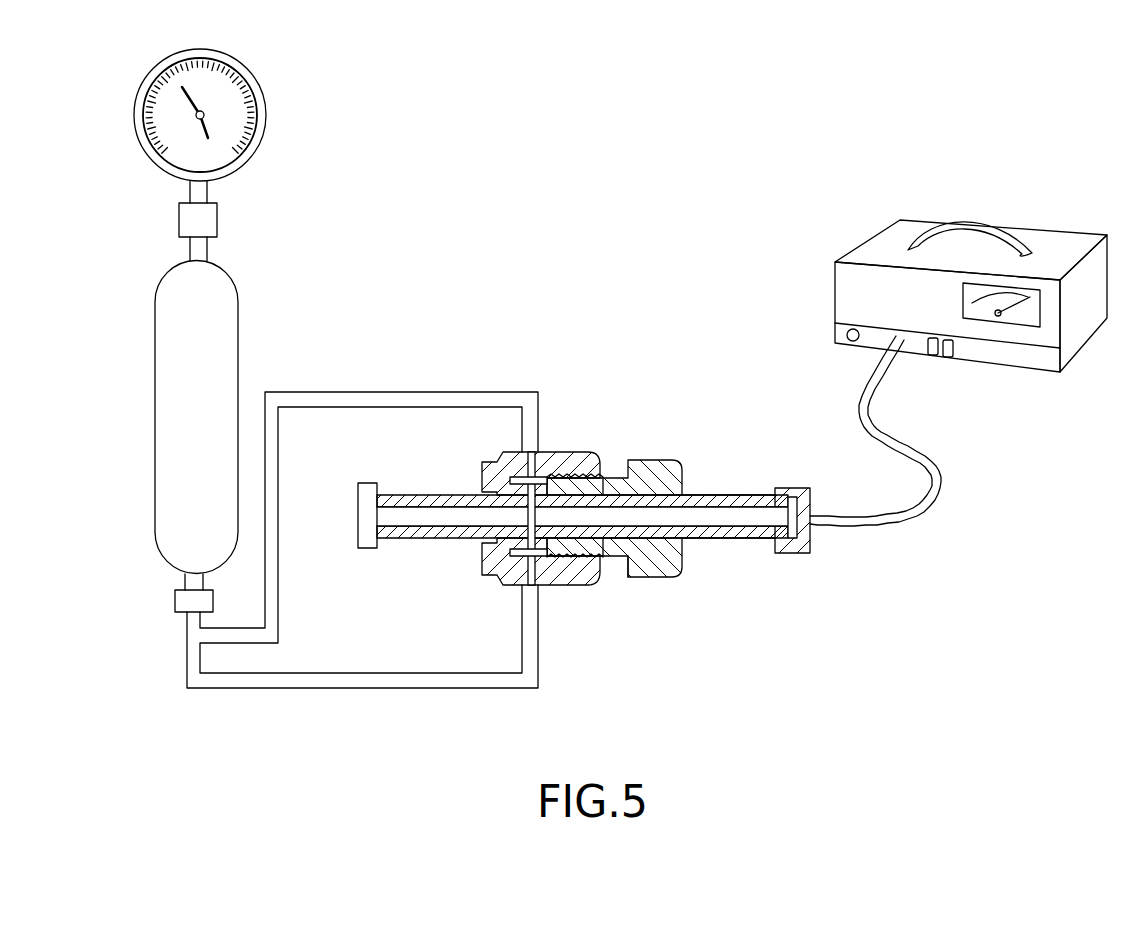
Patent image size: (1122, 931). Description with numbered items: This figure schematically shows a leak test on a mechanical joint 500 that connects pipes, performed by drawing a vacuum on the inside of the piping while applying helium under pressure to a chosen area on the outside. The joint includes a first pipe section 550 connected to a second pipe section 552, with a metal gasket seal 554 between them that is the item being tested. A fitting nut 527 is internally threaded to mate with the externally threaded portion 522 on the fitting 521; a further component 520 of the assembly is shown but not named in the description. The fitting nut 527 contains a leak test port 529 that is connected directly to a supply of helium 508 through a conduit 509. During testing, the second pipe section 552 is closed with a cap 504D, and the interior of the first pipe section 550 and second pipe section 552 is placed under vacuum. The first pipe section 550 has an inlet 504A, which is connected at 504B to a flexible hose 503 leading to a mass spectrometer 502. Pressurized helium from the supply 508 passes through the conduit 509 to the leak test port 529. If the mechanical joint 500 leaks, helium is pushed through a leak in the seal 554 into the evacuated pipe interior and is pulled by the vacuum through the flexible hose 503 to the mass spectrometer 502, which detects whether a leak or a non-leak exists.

The mechanical joint 500 is at (606, 507).
The mass spectrometer 502 is at (1060, 247).
The flexible hose 503 is at (918, 455).
The inlet 504A is at (778, 550).
The connection 504B is at (812, 545).
The cap 504D is at (358, 518).
The supply of helium 508 is at (239, 331).
The conduit 509 is at (396, 393).
The nut 520 is at (497, 572).
The fitting 521 is at (662, 578).
The externally threaded portion 522 is at (612, 467).
The fitting nut 527 is at (582, 466).
The leak test port 529 is at (546, 457).
The first pipe section 550 is at (701, 546).
The second pipe section 552 is at (413, 540).
The metal gasket seal 554 is at (576, 582).